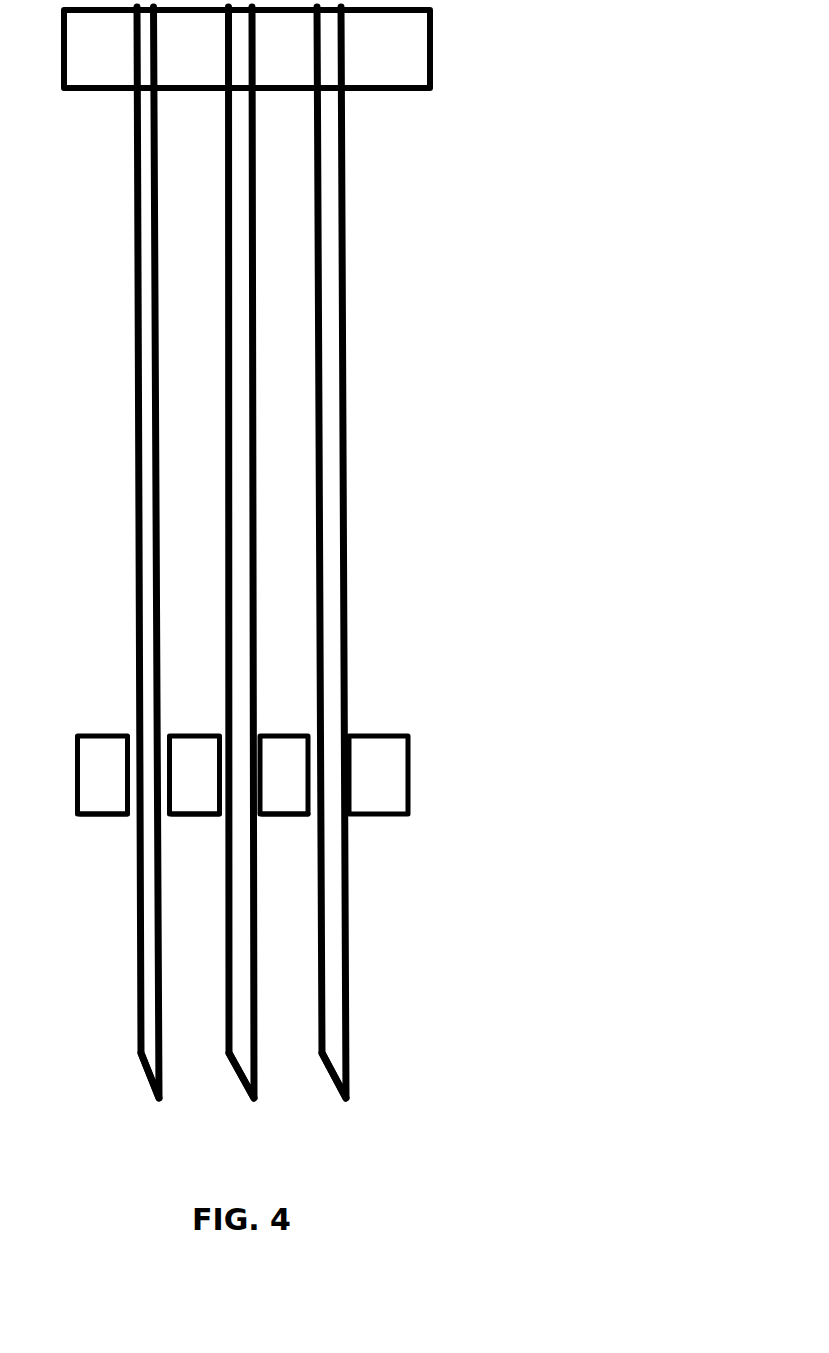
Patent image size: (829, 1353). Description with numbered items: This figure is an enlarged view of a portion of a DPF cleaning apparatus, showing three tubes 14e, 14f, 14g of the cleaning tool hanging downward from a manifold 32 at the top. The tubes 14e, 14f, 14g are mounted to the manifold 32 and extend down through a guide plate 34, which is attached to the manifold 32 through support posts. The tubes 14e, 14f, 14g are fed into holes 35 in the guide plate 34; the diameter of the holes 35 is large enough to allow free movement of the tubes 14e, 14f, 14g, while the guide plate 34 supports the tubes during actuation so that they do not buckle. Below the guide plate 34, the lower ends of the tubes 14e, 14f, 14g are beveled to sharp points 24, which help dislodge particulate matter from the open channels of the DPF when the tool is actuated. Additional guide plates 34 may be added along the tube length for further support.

The manifold 32 is at (434, 50).
The tube 14e is at (158, 243).
The tube 14f is at (256, 241).
The tube 14g is at (348, 246).
The guide plate 34 is at (411, 768).
The holes 35 is at (131, 812).
The sharp points 24 is at (146, 1081).